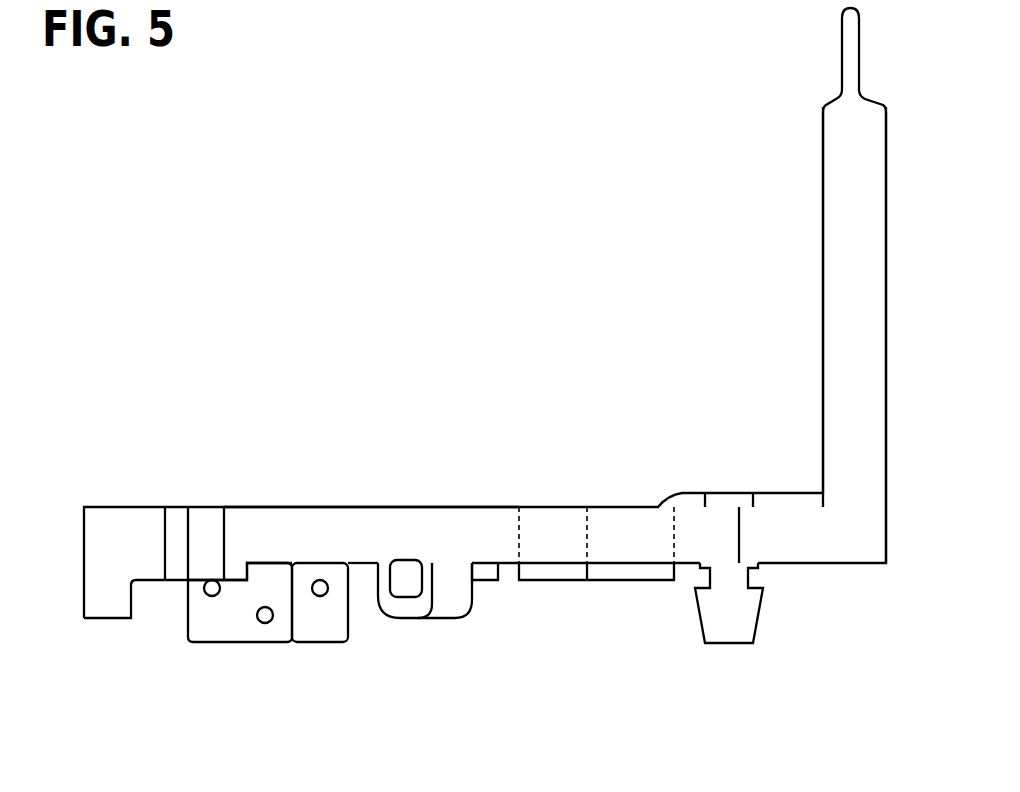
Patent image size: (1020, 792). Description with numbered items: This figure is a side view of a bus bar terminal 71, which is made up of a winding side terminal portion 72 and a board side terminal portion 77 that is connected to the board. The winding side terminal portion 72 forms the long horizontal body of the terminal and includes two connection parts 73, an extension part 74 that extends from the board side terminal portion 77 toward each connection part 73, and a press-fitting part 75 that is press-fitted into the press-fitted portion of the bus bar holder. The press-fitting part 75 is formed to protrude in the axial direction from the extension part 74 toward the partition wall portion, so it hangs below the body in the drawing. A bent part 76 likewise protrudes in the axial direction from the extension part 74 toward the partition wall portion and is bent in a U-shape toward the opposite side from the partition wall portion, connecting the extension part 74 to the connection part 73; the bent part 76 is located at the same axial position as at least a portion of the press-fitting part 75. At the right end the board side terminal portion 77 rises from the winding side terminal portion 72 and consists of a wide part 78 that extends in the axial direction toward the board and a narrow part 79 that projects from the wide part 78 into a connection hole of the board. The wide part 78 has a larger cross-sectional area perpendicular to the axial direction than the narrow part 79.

The bus bar terminal 71 is at (684, 68).
The winding side terminal portion 72 is at (634, 505).
The connection part 73 is at (177, 530).
The extension part 74 is at (363, 530).
The press-fitting part 75 is at (238, 630).
The bent part 76 is at (107, 612).
The board side terminal portion 77 is at (733, 22).
The wide part 78 is at (850, 52).
The narrow part 79 is at (850, 150).